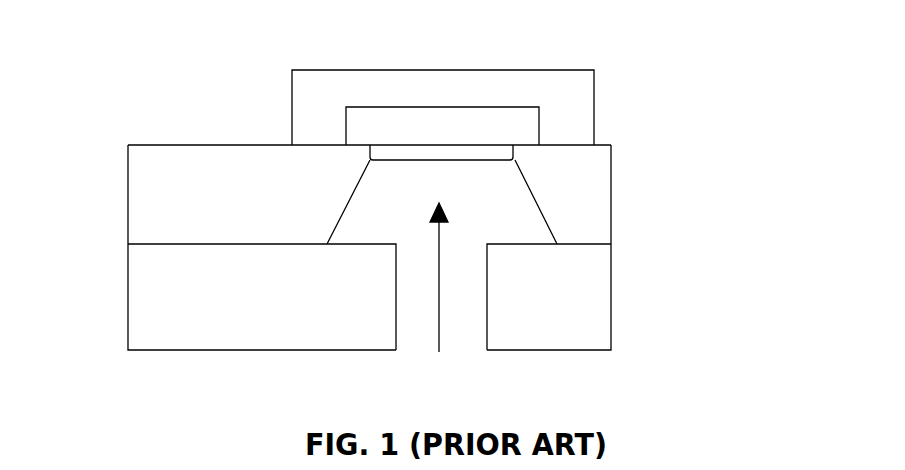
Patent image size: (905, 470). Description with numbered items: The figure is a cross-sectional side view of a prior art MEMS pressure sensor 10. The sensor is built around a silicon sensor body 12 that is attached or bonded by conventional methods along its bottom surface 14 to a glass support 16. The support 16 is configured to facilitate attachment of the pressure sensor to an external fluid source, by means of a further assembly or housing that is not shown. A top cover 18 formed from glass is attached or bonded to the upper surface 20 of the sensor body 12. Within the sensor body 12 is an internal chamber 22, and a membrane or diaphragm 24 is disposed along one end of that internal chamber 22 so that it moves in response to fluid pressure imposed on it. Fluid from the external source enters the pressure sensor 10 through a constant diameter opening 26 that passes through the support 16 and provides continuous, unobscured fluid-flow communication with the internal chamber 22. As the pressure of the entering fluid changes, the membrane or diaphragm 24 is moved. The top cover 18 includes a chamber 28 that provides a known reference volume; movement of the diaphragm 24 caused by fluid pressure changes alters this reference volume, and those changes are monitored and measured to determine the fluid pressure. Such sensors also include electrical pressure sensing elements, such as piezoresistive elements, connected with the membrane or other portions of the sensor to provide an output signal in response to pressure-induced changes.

The MEMS pressure sensor 10 is at (677, 128).
The sensor body 12 is at (589, 207).
The bottom surface 14 is at (157, 245).
The support 16 is at (600, 302).
The top cover 18 is at (568, 78).
The upper surface 20 is at (168, 145).
The internal chamber 22 is at (527, 219).
The membrane or diaphragm 24 is at (368, 174).
The constant diameter opening 26 is at (412, 332).
The chamber 28 is at (508, 122).